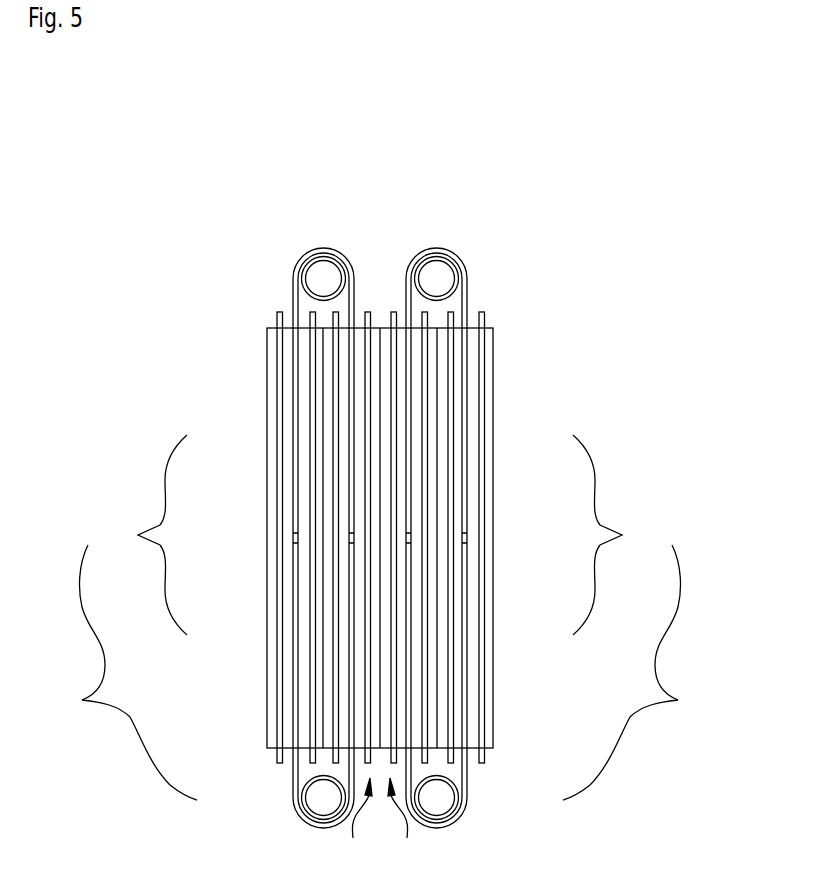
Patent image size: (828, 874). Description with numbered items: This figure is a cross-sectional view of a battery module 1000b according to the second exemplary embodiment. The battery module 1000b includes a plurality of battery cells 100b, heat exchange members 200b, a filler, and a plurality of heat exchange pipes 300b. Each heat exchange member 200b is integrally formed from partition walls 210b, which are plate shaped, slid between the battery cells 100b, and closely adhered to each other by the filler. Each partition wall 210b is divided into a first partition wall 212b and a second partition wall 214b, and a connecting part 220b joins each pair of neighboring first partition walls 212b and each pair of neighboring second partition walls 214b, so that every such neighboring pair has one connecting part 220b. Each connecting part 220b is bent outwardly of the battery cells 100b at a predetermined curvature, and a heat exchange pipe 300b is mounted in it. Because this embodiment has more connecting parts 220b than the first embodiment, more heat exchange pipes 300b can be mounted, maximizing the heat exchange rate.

The battery module 1000b is at (569, 122).
The connecting part 220b is at (432, 250).
The heat exchange pipe 300b is at (300, 278).
The first partition wall 212b is at (351, 427).
The second partition wall 214b is at (351, 617).
The partition wall 210b is at (380, 535).
The heat exchange member 200b is at (380, 672).
The battery cell 100b is at (380, 818).